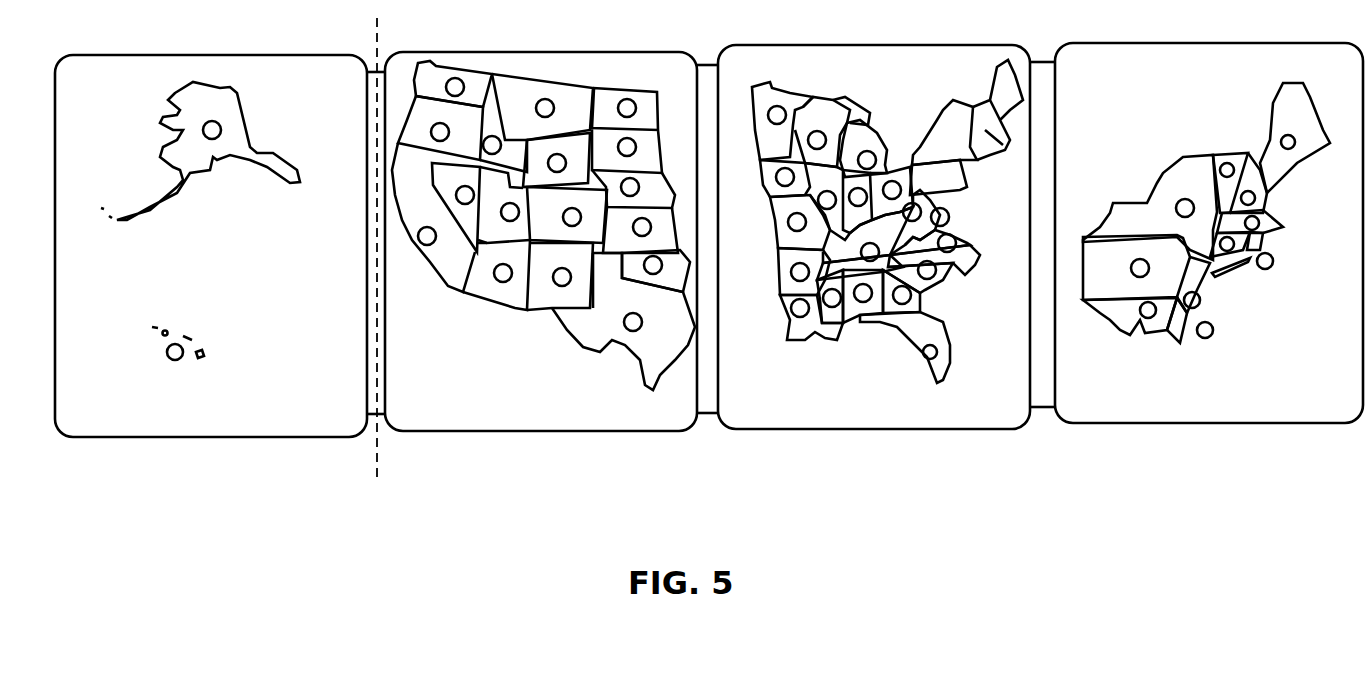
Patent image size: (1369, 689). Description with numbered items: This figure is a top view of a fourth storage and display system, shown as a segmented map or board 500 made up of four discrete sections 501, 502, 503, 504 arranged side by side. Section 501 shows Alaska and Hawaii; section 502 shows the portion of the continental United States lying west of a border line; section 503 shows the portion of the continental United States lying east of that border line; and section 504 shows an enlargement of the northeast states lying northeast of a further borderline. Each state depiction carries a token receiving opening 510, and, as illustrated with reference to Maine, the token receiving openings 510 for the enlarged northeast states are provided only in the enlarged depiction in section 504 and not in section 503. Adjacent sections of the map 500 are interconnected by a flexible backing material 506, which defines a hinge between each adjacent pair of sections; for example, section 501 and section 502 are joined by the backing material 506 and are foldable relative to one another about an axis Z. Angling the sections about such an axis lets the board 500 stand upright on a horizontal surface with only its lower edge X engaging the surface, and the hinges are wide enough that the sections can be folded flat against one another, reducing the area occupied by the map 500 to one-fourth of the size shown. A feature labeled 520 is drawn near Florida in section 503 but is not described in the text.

The segmented map or board 500 is at (865, 30).
The section 501 is at (194, 439).
The section 502 is at (518, 434).
The section 503 is at (900, 430).
The section 504 is at (1235, 424).
The flexible backing material 506 is at (709, 62).
The token receiving openings 510 is at (925, 366).
The highlighted region (Florida) 520 is at (934, 342).
The lower edge X is at (1128, 426).
The axis Z is at (377, 47).